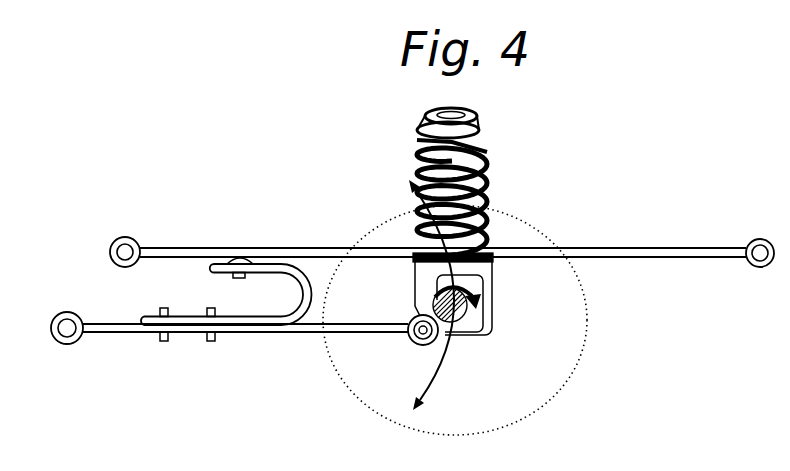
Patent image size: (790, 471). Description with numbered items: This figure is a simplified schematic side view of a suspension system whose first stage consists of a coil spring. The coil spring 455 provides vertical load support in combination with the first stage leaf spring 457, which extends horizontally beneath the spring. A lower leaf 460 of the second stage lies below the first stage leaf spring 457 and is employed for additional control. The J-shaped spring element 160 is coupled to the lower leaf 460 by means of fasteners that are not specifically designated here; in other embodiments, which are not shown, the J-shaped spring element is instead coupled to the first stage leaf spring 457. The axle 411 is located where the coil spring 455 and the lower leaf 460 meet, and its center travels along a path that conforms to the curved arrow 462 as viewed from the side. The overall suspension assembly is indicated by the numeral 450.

The hook 160 is at (305, 310).
The pivot block 411 is at (472, 313).
The lock assembly 450 is at (713, 363).
The spring 455 is at (490, 140).
The upper rod 457 is at (632, 250).
The lower rod 460 is at (120, 330).
The rotation arrow 462 is at (438, 383).